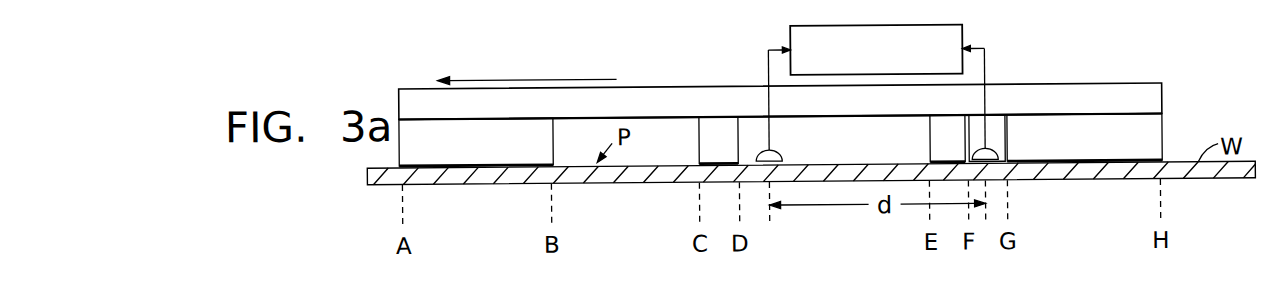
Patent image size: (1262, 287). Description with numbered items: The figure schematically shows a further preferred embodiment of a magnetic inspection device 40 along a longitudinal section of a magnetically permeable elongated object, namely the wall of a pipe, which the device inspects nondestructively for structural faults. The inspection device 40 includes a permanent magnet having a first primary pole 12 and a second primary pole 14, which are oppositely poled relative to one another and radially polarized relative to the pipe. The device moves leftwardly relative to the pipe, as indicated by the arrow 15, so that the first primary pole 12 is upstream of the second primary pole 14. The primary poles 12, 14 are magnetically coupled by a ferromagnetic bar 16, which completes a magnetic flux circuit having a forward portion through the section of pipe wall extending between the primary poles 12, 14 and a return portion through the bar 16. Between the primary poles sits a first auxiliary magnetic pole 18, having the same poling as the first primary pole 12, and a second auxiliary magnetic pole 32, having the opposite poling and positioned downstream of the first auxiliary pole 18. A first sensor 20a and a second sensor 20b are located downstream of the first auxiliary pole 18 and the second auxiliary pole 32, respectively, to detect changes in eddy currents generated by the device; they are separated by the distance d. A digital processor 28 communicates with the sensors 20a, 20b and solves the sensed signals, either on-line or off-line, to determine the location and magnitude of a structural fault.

The first primary pole 12 is at (553, 150).
The second primary pole 14 is at (1163, 150).
The arrow 15 is at (528, 78).
The ferromagnetic bar 16 is at (659, 86).
The first auxiliary magnetic pole 18 is at (698, 152).
The first sensor 20a is at (772, 135).
The second sensor 20b is at (985, 134).
The digital processor 28 is at (963, 29).
The second auxiliary magnetic pole 32 is at (927, 161).
The magnetic inspection device 40 is at (1104, 77).